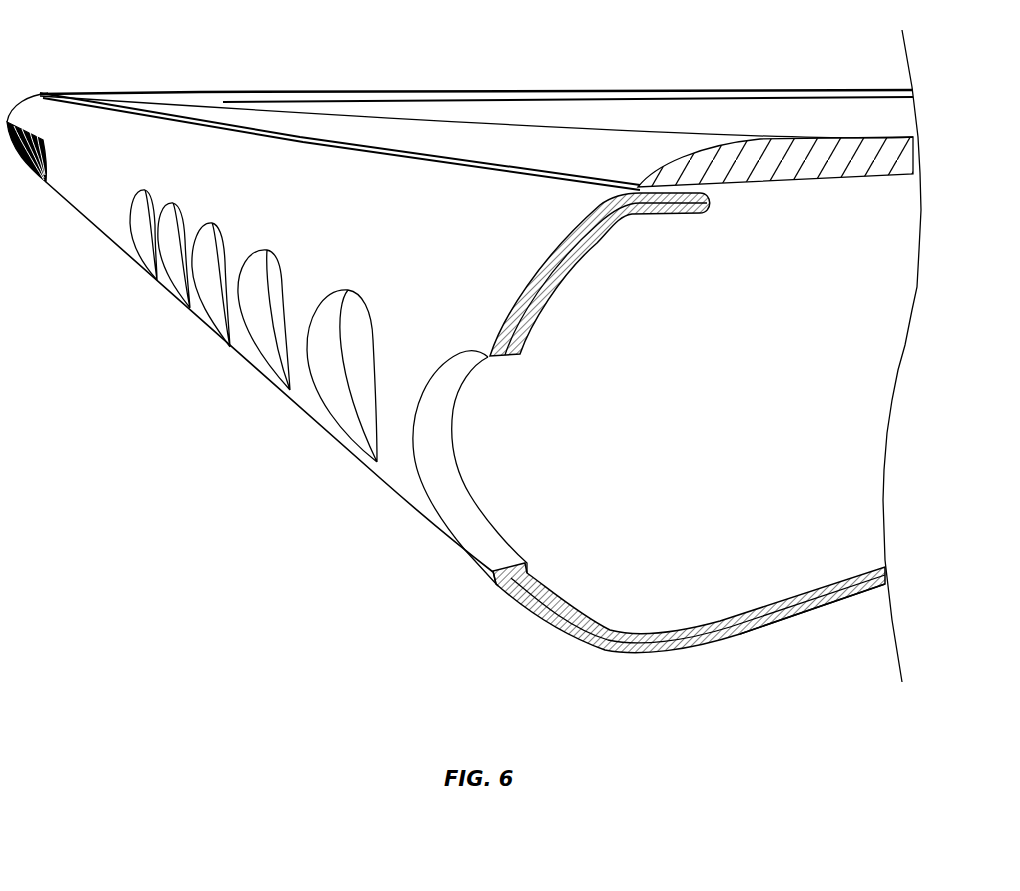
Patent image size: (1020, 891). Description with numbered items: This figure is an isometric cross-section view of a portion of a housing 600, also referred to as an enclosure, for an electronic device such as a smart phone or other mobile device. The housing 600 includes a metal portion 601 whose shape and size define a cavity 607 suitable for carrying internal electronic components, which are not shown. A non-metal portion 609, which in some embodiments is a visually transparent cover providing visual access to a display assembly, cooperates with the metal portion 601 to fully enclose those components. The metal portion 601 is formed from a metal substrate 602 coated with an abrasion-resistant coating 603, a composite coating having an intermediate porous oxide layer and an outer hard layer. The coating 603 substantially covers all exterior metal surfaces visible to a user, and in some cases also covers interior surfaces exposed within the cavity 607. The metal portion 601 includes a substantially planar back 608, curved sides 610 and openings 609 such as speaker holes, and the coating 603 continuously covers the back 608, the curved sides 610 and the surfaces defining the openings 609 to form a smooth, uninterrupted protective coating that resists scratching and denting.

The housing 600 is at (131, 41).
The metal portion 601 is at (362, 236).
The metal substrate 602 is at (580, 263).
The abrasion-resistant coating 603 is at (338, 367).
The cavity 607 is at (727, 408).
The back 608 is at (816, 614).
The non-metal portion / openings 609 is at (750, 130).
The curved sides 610 is at (501, 608).